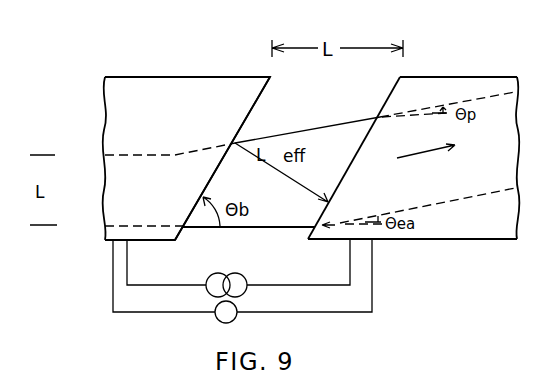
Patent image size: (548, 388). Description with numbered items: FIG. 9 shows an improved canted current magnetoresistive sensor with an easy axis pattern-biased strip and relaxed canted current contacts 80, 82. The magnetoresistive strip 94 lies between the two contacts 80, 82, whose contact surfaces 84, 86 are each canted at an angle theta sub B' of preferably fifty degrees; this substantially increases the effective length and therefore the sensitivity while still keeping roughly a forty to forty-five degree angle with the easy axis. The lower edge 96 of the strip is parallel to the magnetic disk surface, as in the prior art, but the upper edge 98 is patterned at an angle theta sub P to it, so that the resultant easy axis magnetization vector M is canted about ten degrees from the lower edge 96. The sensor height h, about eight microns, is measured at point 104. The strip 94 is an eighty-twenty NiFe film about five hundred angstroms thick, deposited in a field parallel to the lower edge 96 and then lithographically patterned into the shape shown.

The first electro-optic crystal block 80 is at (167, 90).
The second electro-optic crystal block 82 is at (458, 78).
The contact surface 84 is at (209, 180).
The contact surface 86 is at (353, 168).
The magnetoresistive strip 94 is at (337, 126).
The lower edge 96 is at (273, 240).
The upper edge 98 is at (290, 135).
The point 104 is at (210, 147).